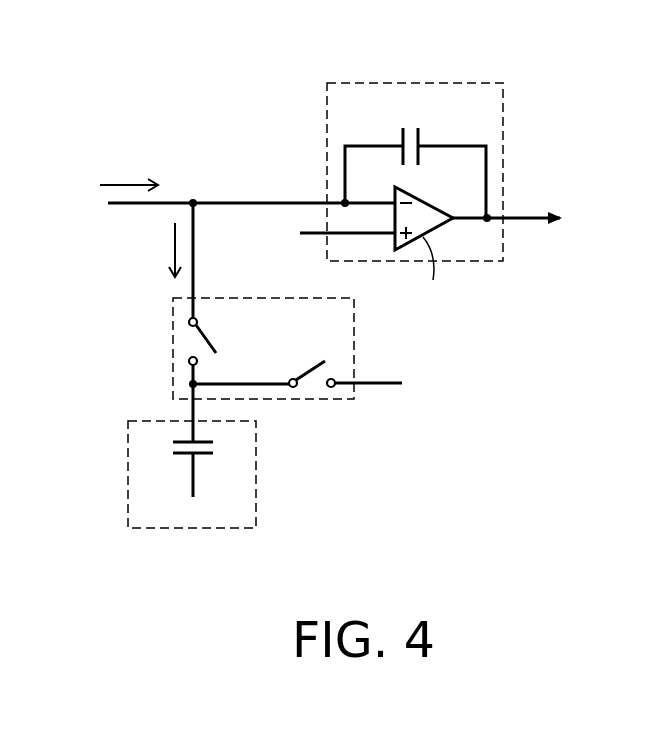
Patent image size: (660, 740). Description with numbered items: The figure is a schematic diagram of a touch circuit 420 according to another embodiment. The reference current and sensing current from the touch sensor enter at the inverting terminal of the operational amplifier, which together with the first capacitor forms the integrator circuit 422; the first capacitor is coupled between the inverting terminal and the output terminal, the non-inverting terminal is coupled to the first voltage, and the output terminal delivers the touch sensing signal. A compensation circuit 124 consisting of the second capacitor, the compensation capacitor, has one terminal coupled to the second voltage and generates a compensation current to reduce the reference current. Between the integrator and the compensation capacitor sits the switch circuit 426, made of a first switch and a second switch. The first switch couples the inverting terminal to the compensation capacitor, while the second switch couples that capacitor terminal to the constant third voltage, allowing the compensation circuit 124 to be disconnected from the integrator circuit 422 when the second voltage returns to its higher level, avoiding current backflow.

The touch circuit 420 is at (339, 282).
The integrator circuit 422 is at (450, 83).
The switch circuit 426 is at (173, 348).
The compensation circuit 124 is at (256, 468).